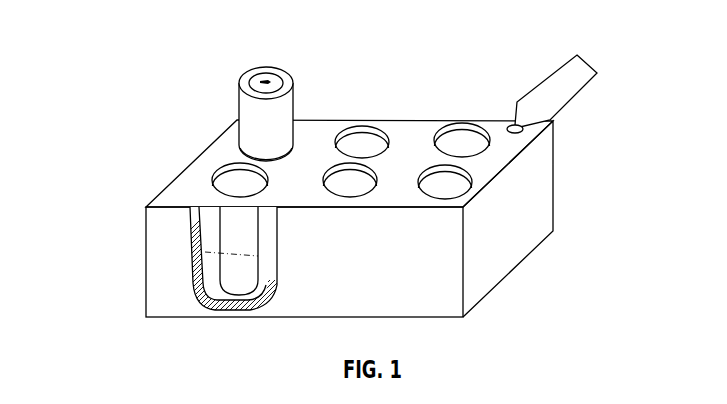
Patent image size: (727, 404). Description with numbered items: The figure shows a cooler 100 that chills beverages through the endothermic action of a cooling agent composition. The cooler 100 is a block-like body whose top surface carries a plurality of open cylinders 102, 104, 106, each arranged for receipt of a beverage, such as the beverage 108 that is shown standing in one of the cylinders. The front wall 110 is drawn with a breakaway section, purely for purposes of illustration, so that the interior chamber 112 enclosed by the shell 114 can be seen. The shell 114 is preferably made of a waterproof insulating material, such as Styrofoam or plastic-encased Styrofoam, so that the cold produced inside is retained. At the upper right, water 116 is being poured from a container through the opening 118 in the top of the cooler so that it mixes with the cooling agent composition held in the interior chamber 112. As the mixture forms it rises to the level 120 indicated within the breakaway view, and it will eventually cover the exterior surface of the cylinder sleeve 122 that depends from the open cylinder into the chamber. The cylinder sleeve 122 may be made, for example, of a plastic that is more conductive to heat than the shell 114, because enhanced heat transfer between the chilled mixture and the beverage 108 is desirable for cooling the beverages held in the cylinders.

The cooler 100 is at (158, 108).
The open cylinder 102 is at (356, 127).
The open cylinder 104 is at (238, 136).
The open cylinder 106 is at (216, 178).
The beverage 108 is at (241, 68).
The wall 110 is at (404, 280).
The interior chamber 112 is at (213, 287).
The shell 114 is at (541, 179).
The water 116 is at (562, 64).
The opening 118 is at (514, 124).
The level 120 is at (256, 247).
The cylinder sleeve 122 is at (230, 233).